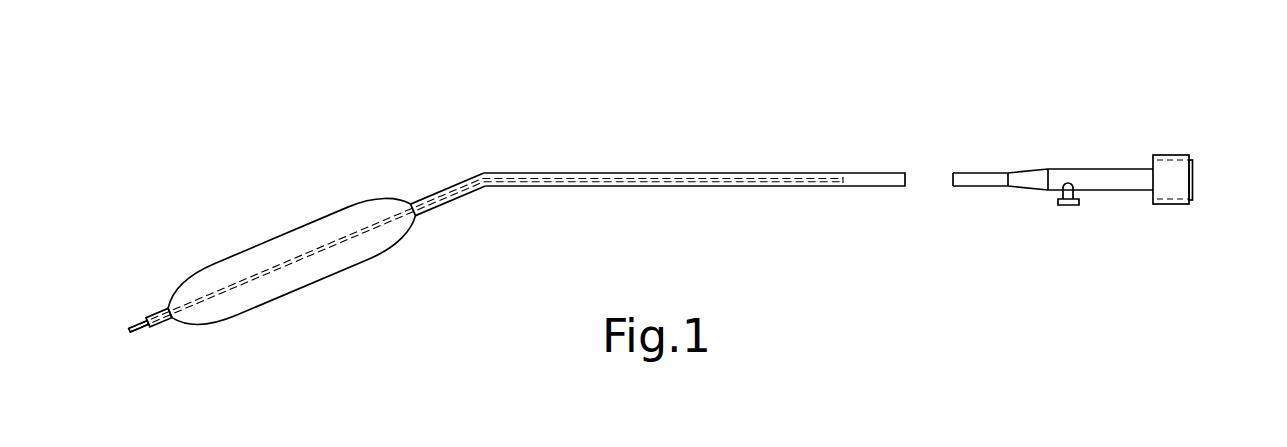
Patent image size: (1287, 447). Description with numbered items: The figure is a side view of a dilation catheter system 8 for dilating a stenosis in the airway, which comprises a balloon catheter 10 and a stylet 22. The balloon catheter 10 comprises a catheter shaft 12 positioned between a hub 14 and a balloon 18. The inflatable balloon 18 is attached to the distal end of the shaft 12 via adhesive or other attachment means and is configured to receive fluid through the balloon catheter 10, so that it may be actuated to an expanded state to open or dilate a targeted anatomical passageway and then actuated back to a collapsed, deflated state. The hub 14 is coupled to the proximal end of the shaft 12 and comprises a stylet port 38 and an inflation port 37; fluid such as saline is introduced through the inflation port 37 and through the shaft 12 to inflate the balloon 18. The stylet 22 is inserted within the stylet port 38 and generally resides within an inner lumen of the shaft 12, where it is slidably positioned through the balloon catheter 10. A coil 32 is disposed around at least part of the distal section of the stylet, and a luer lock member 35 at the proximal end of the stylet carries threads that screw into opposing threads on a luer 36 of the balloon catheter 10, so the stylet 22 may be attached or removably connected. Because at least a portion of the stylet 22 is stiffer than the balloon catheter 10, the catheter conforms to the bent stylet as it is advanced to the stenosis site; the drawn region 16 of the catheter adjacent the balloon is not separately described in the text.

The balloon catheter 10 is at (650, 82).
The dilation catheter system 8 is at (248, 200).
The coil 32 is at (137, 323).
The balloon 18 is at (327, 213).
The angled shaft section 16 is at (435, 190).
The stylet 22 is at (513, 176).
The catheter shaft 12 is at (887, 172).
The hub 14 is at (1093, 169).
The luer lock member 35 is at (1172, 160).
The luer 36 is at (1172, 205).
The inflation port 37 is at (1065, 205).
The stylet port 38 is at (1193, 180).